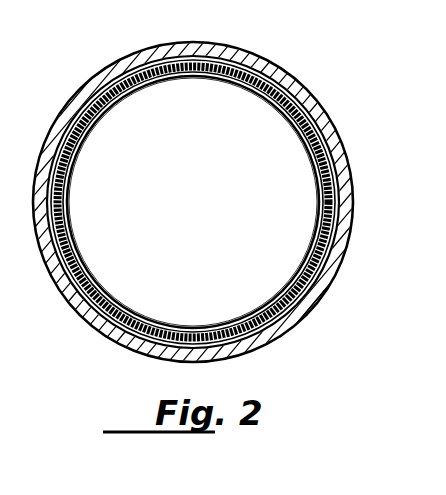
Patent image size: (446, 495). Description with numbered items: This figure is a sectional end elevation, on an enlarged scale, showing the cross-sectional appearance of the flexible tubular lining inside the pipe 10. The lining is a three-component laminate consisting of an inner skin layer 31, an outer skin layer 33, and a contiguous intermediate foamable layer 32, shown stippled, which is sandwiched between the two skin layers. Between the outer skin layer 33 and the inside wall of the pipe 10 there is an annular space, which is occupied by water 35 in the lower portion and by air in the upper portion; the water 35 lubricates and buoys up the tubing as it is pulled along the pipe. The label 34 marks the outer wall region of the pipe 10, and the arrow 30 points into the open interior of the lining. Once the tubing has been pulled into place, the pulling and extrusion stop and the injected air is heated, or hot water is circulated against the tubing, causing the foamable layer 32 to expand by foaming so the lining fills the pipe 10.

The pipe 10 is at (309, 77).
The inner bore 30 is at (238, 84).
The inner skin layer 31 is at (320, 227).
The intermediate foamable layer 32 is at (320, 163).
The outer skin layer 33 is at (336, 179).
The outer jacket 34 is at (326, 129).
The water 35 is at (312, 292).